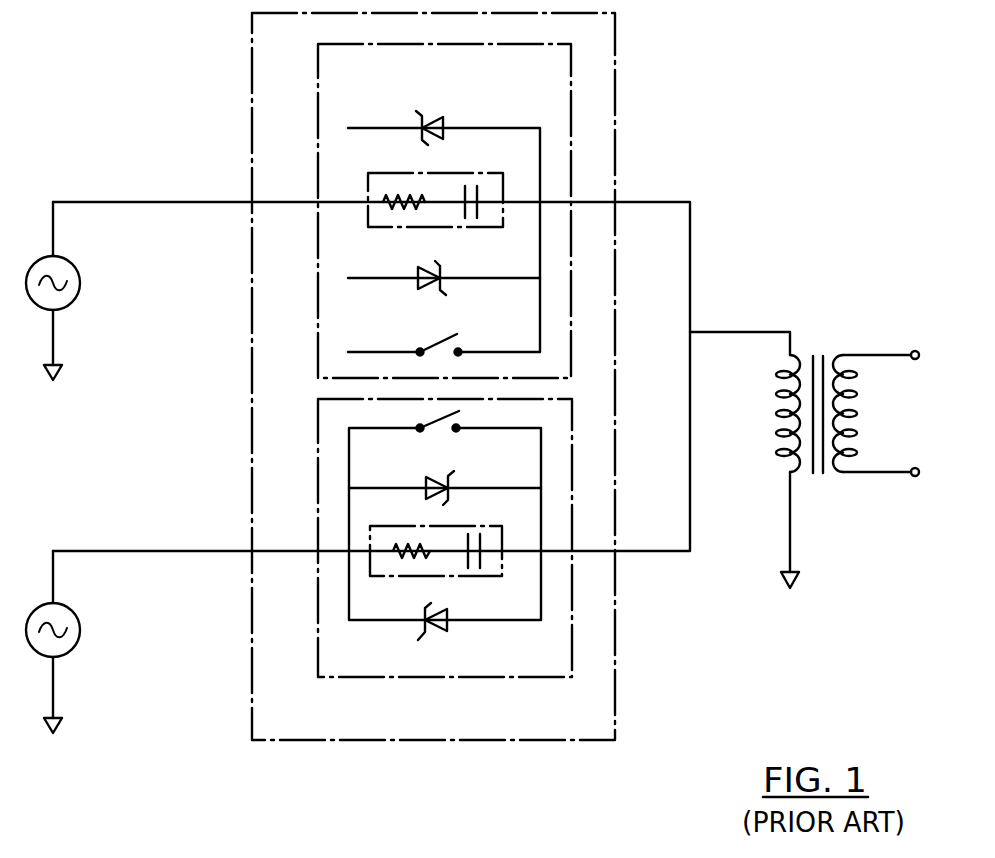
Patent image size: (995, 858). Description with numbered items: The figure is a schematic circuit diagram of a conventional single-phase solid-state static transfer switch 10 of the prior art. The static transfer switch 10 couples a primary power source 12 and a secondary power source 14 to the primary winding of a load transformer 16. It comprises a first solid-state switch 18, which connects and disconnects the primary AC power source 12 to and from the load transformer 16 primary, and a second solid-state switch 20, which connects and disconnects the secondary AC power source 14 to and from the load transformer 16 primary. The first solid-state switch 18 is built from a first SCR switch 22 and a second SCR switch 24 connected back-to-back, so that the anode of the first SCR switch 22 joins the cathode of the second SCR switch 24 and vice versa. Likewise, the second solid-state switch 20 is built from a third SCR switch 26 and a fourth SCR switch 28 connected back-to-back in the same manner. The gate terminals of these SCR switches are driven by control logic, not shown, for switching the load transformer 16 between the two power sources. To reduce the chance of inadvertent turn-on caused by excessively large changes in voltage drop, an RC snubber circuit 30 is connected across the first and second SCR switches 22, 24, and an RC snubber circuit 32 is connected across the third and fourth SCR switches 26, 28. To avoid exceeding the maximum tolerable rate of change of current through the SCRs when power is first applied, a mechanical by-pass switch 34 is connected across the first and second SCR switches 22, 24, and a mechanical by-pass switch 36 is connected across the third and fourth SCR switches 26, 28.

The static transfer switch 10 is at (615, 670).
The primary power source 12 is at (73, 272).
The secondary power source 14 is at (74, 622).
The load transformer 16 is at (823, 336).
The first solid-state switch 18 is at (571, 100).
The second solid-state switch 20 is at (572, 618).
The first SCR switch 22 is at (446, 118).
The second SCR switch 24 is at (416, 270).
The third SCR switch 26 is at (455, 483).
The fourth SCR switch 28 is at (450, 613).
The RC snubber circuit 30 is at (452, 173).
The RC snubber circuit 32 is at (458, 525).
The mechanical by-pass switch 34 is at (427, 347).
The mechanical by-pass switch 36 is at (438, 415).